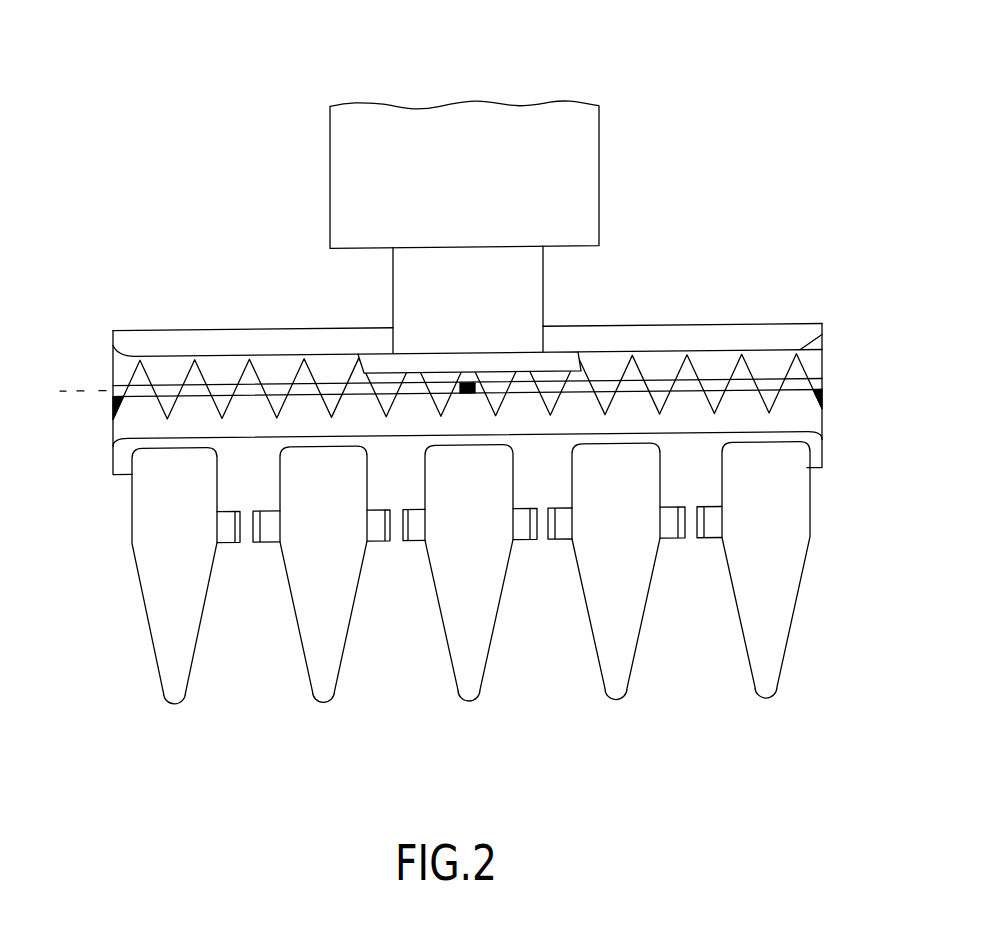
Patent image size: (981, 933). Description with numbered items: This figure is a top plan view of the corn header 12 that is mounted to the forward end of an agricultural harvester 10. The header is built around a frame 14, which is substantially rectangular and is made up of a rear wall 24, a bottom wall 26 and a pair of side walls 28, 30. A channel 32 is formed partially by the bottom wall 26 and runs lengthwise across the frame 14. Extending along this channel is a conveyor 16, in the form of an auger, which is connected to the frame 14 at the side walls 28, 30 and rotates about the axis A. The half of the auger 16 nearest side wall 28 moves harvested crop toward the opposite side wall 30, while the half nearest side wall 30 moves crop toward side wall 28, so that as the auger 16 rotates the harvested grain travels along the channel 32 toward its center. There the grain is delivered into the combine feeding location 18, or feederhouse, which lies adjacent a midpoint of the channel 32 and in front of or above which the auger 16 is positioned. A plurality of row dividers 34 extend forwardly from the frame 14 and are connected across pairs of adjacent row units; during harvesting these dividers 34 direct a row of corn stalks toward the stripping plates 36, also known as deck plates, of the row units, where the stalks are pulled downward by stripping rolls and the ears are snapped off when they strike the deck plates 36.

The agricultural harvester 10 is at (560, 56).
The corn header 12 is at (117, 738).
The frame 14 is at (143, 327).
The conveyor 16 is at (218, 390).
The combine feeding location 18 is at (500, 353).
The rear wall 24 is at (657, 327).
The bottom wall 26 is at (682, 409).
The side wall 28 is at (113, 353).
The side wall 30 is at (823, 366).
The channel 32 is at (812, 370).
The row divider 34 is at (191, 660).
The stripping plate 36 is at (257, 541).